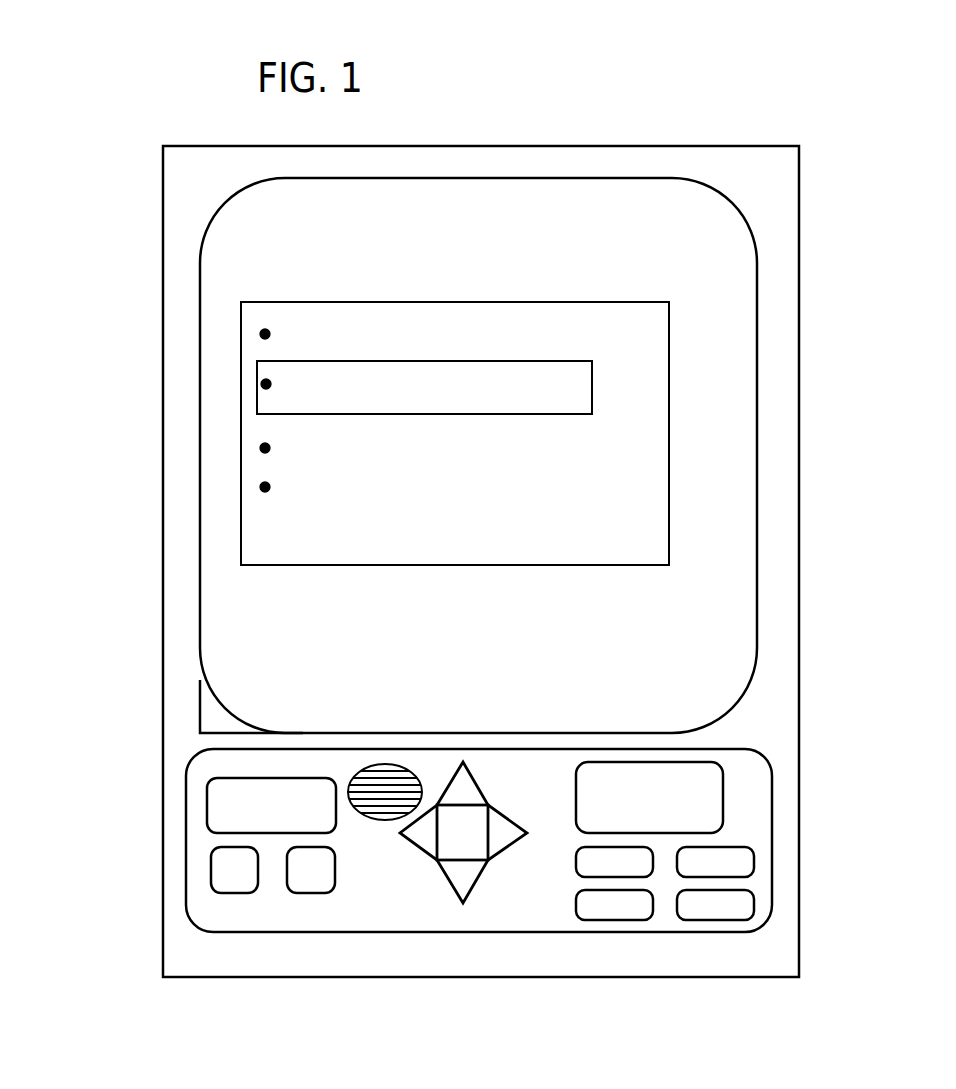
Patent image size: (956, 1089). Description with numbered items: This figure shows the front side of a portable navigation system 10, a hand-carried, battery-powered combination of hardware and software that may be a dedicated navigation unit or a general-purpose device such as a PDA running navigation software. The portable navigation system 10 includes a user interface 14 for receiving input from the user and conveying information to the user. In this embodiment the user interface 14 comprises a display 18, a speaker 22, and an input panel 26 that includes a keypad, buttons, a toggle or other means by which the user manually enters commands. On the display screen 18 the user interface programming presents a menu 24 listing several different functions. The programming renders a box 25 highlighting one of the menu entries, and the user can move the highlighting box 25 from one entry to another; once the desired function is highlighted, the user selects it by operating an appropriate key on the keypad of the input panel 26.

The portable navigation system 10 is at (478, 140).
The user interface 14 is at (208, 680).
The display 18 is at (247, 638).
The speaker 22 is at (358, 775).
The menu 24 is at (232, 317).
The box 25 is at (593, 354).
The input panel 26 is at (363, 912).